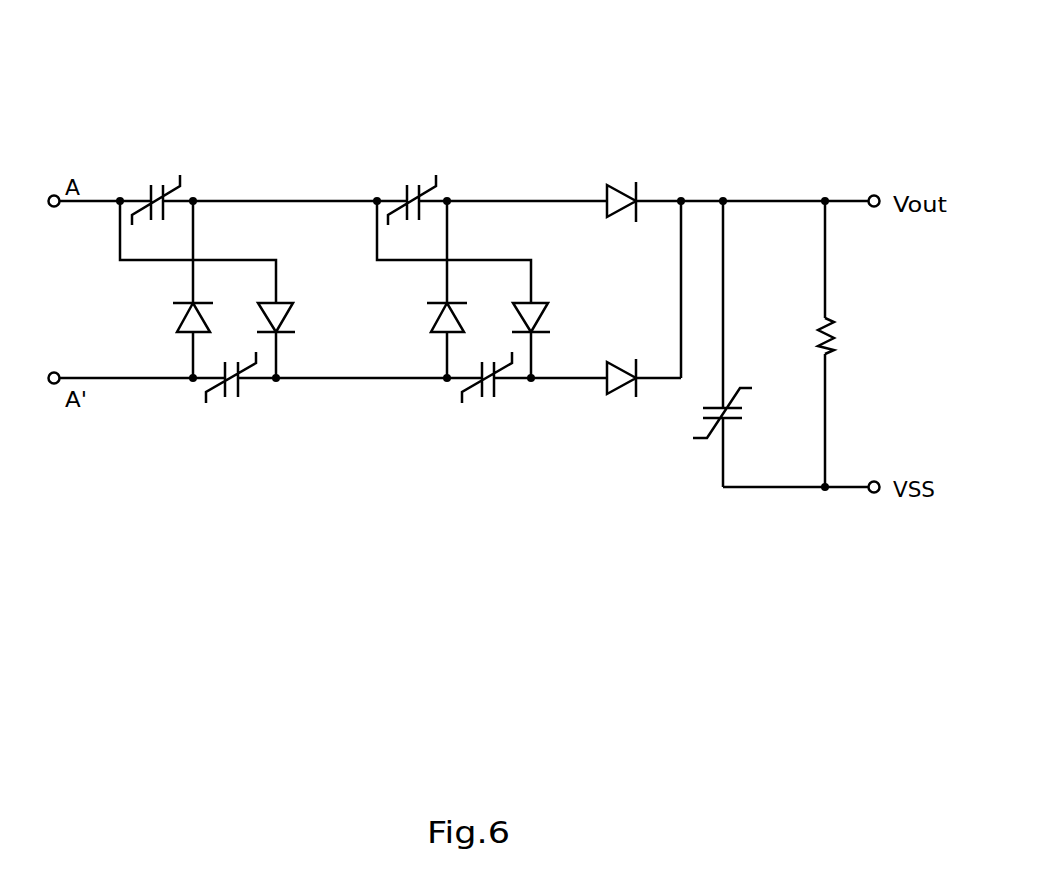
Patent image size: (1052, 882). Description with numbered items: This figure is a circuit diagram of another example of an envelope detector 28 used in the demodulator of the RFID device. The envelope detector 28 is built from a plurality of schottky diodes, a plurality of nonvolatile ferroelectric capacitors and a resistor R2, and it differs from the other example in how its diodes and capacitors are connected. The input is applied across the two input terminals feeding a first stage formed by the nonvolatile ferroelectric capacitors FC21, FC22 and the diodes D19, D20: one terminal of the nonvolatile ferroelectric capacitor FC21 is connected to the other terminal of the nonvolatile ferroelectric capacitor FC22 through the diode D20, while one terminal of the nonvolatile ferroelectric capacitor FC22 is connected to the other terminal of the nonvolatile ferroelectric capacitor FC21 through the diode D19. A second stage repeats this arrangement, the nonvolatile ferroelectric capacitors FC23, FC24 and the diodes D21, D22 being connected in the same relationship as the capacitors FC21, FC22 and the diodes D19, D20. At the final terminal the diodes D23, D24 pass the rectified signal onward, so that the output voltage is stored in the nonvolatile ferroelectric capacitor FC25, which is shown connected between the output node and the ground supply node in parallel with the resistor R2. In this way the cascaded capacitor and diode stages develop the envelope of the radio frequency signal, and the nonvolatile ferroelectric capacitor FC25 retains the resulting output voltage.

The envelope detector 28 is at (752, 104).
The nonvolatile ferroelectric capacitor FC21 is at (155, 186).
The nonvolatile ferroelectric capacitor FC22 is at (236, 395).
The nonvolatile ferroelectric capacitor FC23 is at (409, 186).
The nonvolatile ferroelectric capacitor FC24 is at (492, 395).
The nonvolatile ferroelectric capacitor FC25 is at (741, 421).
The schottky diode D19 is at (172, 318).
The schottky diode D20 is at (302, 318).
The schottky diode D21 is at (427, 318).
The schottky diode D22 is at (557, 318).
The schottky diode D23 is at (621, 187).
The schottky diode D24 is at (621, 397).
The resistor R2 is at (845, 336).